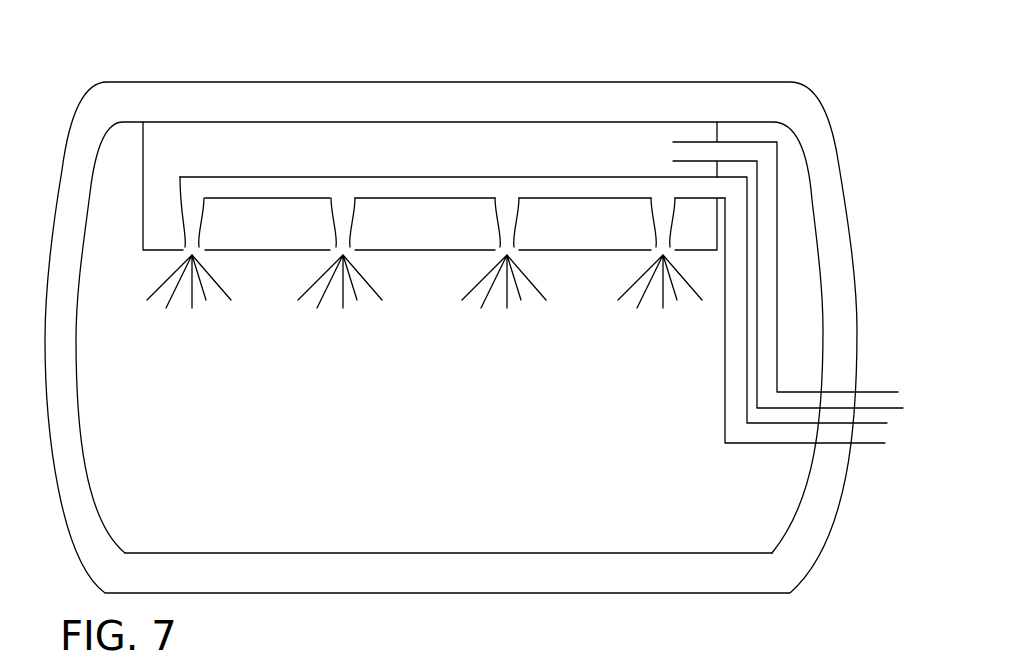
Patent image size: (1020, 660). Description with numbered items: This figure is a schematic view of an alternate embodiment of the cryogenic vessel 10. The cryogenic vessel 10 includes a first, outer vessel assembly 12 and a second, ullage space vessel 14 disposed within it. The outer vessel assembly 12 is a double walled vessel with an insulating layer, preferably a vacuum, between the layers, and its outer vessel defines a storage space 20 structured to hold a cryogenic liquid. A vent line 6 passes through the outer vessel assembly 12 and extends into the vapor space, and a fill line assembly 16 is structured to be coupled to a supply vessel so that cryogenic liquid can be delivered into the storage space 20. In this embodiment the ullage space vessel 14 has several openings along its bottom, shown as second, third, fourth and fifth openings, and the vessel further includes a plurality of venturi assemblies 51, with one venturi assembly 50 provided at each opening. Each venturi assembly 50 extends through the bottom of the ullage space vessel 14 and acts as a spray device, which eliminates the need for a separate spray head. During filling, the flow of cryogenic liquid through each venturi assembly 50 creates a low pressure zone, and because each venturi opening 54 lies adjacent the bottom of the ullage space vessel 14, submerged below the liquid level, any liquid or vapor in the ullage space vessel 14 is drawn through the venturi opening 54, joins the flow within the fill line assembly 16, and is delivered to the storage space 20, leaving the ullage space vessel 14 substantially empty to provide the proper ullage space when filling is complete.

The cryogenic vessel 10 is at (418, 63).
The outer vessel assembly 12 is at (558, 83).
The ullage space vessel 14 is at (220, 130).
The storage space 20 is at (407, 517).
The vent line 6 is at (767, 335).
The fill line assembly 16 is at (732, 350).
The venturi assembly 50 is at (322, 228).
The venturi opening 54 is at (182, 243).
The plurality of venturi assemblies 51 is at (162, 256).